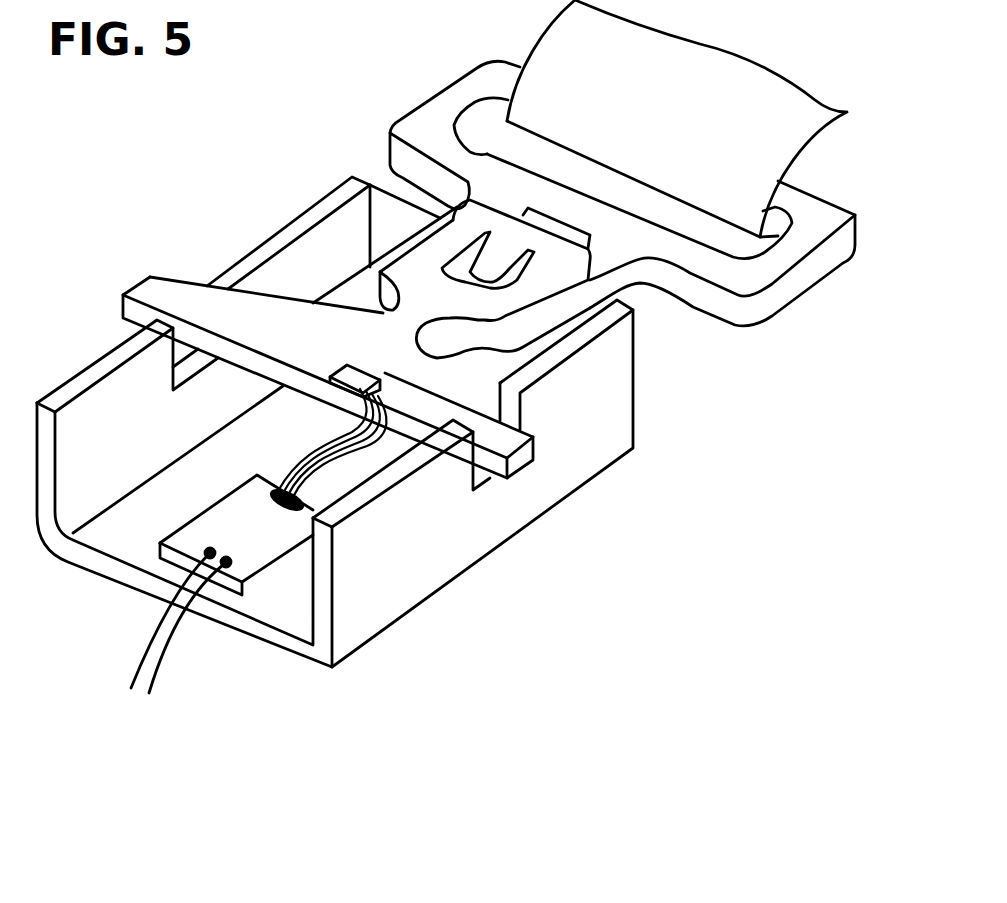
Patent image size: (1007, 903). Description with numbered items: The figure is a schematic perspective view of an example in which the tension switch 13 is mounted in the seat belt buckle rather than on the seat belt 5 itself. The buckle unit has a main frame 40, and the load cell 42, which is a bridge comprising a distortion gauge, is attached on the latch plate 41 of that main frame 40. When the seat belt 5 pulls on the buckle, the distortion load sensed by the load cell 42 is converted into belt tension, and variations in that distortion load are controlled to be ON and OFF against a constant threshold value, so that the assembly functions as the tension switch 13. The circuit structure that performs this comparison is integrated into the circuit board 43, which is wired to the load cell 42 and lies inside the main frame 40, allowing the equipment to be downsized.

The seat belt webbing 5 is at (785, 125).
The tension switch 13 is at (206, 667).
The main frame 40 is at (598, 448).
The latch plate 41 is at (514, 466).
The load cell 42 is at (330, 377).
The circuit board 43 is at (250, 538).